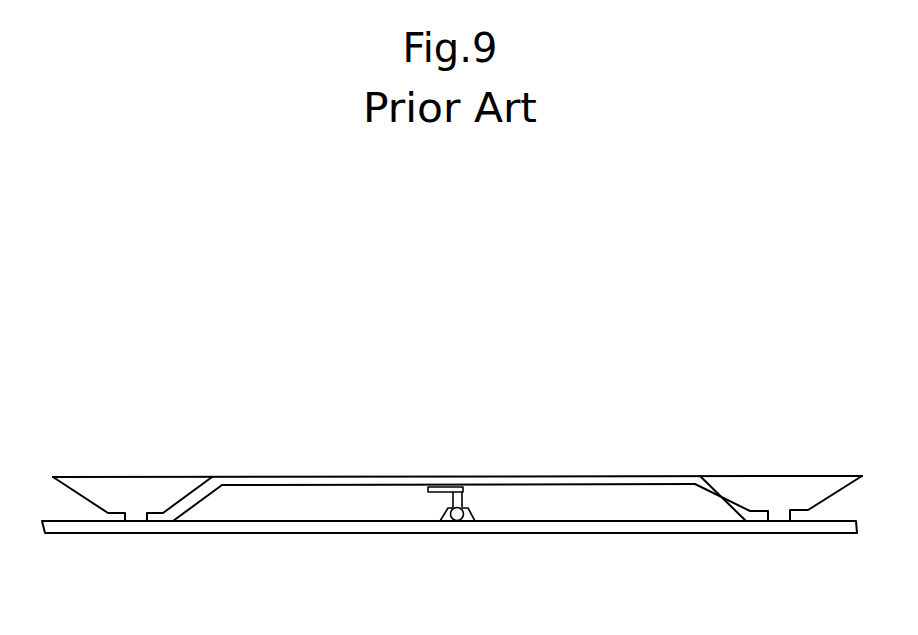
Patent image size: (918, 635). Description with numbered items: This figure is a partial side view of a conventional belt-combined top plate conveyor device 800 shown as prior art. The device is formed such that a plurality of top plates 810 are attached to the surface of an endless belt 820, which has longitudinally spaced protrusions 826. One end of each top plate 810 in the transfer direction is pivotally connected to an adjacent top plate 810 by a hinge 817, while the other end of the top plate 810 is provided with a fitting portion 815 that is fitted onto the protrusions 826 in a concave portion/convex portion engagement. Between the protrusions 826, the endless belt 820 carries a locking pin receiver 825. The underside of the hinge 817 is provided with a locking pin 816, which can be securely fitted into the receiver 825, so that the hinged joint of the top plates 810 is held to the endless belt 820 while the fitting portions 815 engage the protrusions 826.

The top plate conveyor device 800 is at (505, 402).
The top plate 810 is at (321, 481).
The fitting portion 815 is at (183, 503).
The locking pin 816 is at (463, 491).
The hinge 817 is at (443, 484).
The endless belt 820 is at (356, 527).
The locking pin receiver 825 is at (468, 505).
The protrusion 826 is at (105, 492).